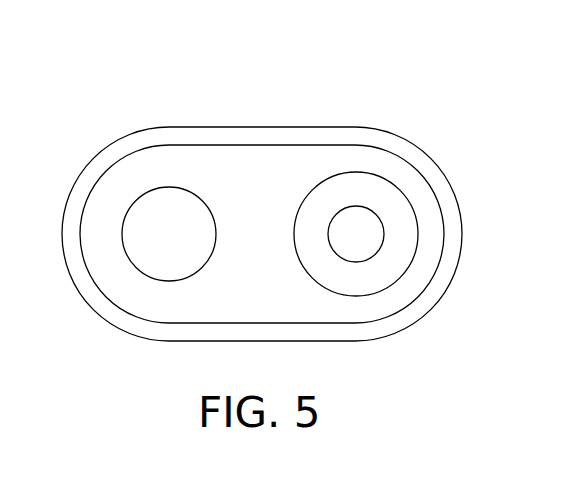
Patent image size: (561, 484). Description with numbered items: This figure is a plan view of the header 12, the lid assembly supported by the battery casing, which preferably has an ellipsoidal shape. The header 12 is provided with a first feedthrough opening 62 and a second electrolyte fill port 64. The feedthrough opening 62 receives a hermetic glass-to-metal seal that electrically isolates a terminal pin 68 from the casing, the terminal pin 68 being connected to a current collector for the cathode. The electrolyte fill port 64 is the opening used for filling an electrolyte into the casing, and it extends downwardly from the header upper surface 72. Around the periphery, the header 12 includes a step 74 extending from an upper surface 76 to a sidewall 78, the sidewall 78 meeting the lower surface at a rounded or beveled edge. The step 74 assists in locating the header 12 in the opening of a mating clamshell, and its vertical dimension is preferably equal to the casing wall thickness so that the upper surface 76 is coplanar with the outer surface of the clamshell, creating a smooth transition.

The header 12 is at (96, 128).
The feedthrough opening 62 is at (356, 172).
The electrolyte fill port 64 is at (130, 265).
The terminal pin 68 is at (358, 248).
The header upper surface 72 is at (398, 237).
The step 74 is at (418, 160).
The upper surface 76 is at (266, 199).
The sidewall 78 is at (183, 127).